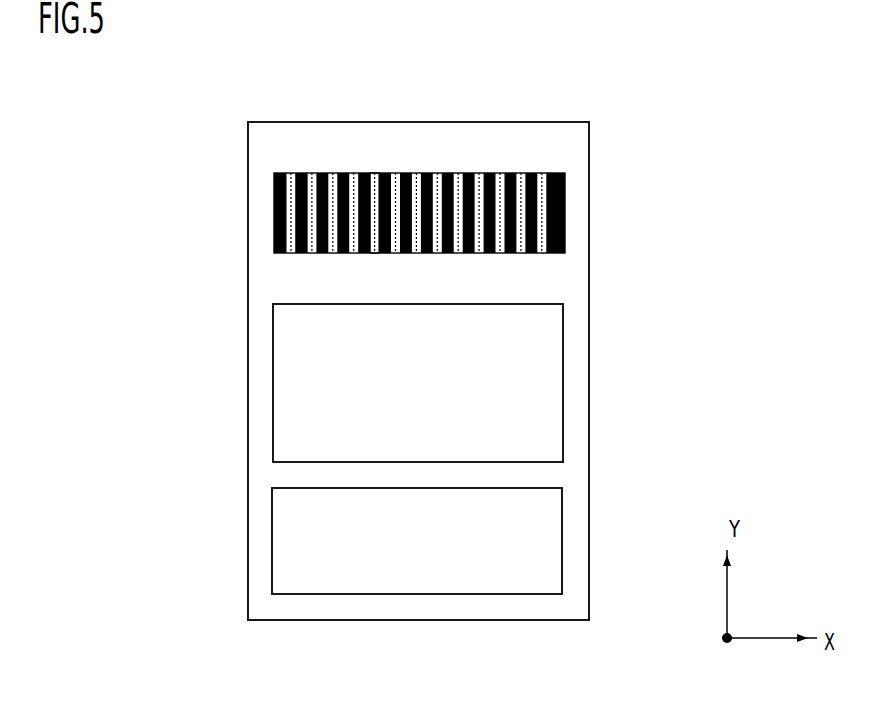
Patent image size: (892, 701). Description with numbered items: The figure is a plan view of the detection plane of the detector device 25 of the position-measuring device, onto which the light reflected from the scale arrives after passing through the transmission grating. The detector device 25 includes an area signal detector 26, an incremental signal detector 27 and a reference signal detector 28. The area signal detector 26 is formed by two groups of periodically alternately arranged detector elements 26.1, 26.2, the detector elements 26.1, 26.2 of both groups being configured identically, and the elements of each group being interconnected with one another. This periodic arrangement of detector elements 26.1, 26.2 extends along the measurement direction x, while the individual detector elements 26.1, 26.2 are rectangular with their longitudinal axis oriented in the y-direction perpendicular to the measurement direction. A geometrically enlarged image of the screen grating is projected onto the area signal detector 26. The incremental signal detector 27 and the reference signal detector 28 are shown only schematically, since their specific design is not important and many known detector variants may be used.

The detector device 25 is at (215, 582).
The area signal detector 26 is at (568, 182).
The detector element 26.1 is at (293, 172).
The detector element 26.2 is at (368, 172).
The incremental signal detector 27 is at (525, 380).
The reference signal detector 28 is at (523, 537).